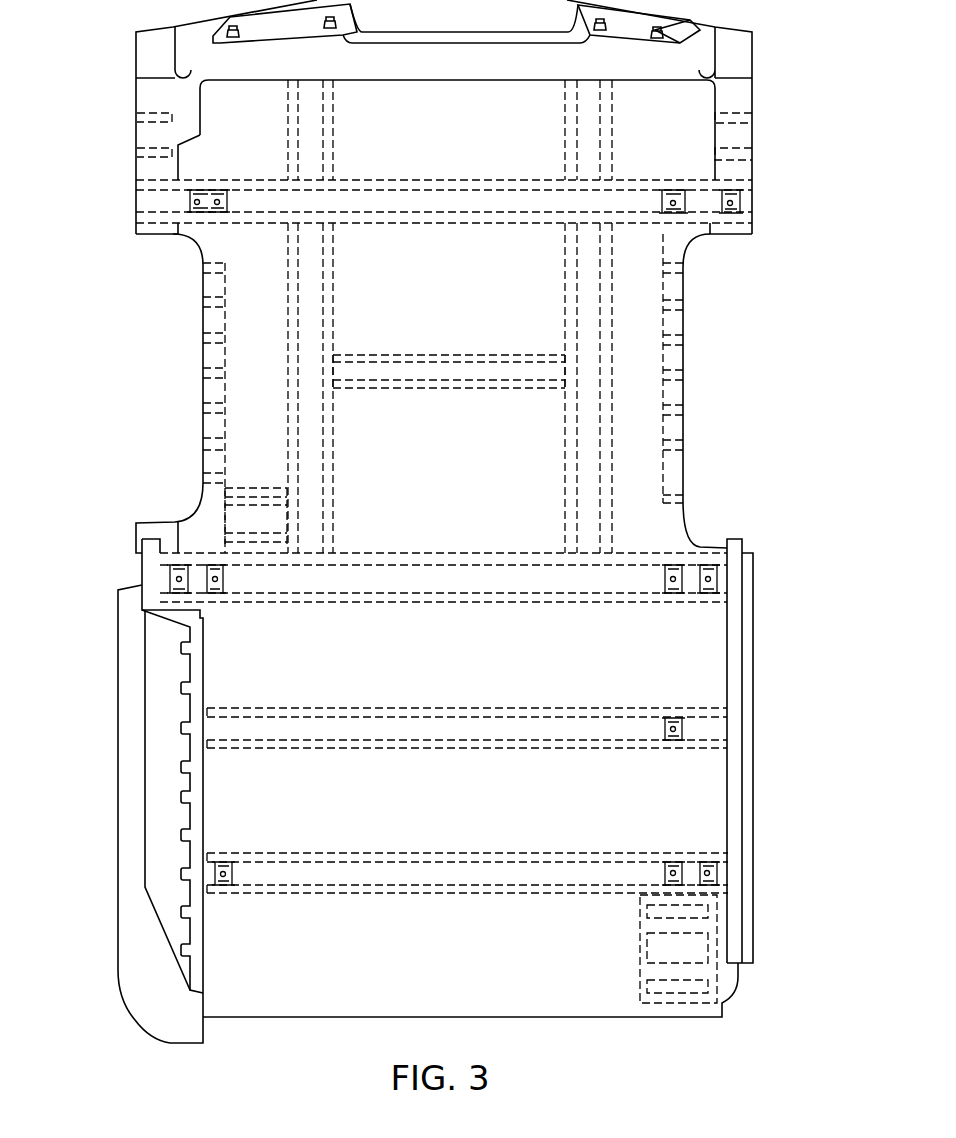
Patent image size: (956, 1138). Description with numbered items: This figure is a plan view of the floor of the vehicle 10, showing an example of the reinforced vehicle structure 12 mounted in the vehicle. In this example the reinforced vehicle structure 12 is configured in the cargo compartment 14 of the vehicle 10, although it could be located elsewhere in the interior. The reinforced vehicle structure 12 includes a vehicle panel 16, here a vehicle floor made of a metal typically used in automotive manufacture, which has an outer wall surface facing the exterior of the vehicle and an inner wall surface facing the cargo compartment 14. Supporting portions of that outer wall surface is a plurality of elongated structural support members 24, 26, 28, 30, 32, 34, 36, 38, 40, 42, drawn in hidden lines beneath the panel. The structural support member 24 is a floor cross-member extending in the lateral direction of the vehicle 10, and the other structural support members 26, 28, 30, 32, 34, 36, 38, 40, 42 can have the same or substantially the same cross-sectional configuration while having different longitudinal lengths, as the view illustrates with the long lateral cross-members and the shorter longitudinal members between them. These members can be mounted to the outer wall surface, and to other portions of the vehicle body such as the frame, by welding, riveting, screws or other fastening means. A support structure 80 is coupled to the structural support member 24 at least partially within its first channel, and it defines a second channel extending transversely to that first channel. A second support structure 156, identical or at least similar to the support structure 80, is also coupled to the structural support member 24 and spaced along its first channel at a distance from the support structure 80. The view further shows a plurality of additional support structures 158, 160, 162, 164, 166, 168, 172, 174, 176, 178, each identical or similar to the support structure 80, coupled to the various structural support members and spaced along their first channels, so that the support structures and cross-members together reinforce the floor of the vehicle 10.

The vehicle 10 is at (90, 287).
The reinforced vehicle structure 12 is at (249, 620).
The cargo compartment 14 is at (532, 487).
The vehicle panel 16 is at (687, 627).
The structural support member 24 is at (375, 605).
The structural support member 26 is at (510, 752).
The structural support member 28 is at (443, 896).
The structural support member 30 is at (263, 487).
The structural support member 32 is at (335, 457).
The structural support member 34 is at (565, 437).
The structural support member 36 is at (430, 353).
The structural support member 38 is at (470, 178).
The structural support member 40 is at (335, 113).
The structural support member 42 is at (617, 113).
The support structure 80 is at (225, 578).
The second support structure 156 is at (160, 578).
The additional support structure 158 is at (662, 578).
The additional support structure 160 is at (717, 577).
The additional support structure 162 is at (663, 730).
The additional support structure 164 is at (233, 875).
The additional support structure 166 is at (662, 875).
The additional support structure 168 is at (717, 872).
The additional support structure 172 is at (665, 205).
The additional support structure 174 is at (742, 198).
The additional support structure 176 is at (192, 188).
The additional support structure 178 is at (223, 188).